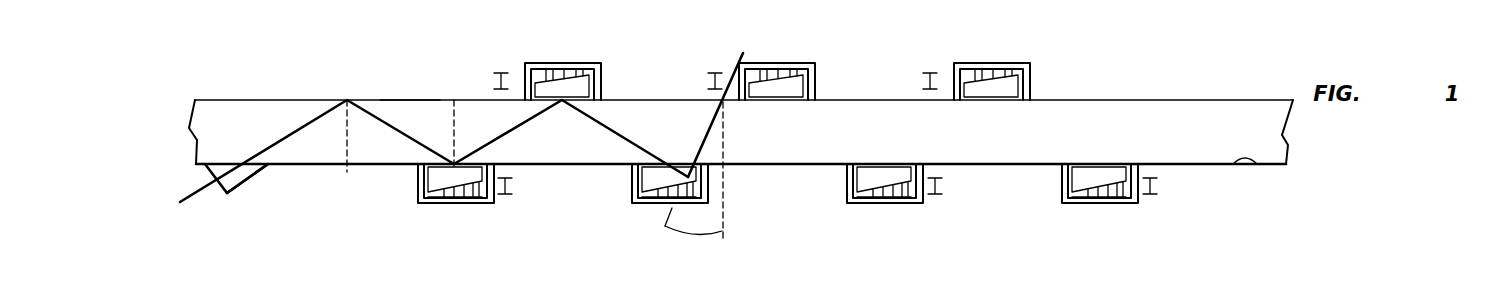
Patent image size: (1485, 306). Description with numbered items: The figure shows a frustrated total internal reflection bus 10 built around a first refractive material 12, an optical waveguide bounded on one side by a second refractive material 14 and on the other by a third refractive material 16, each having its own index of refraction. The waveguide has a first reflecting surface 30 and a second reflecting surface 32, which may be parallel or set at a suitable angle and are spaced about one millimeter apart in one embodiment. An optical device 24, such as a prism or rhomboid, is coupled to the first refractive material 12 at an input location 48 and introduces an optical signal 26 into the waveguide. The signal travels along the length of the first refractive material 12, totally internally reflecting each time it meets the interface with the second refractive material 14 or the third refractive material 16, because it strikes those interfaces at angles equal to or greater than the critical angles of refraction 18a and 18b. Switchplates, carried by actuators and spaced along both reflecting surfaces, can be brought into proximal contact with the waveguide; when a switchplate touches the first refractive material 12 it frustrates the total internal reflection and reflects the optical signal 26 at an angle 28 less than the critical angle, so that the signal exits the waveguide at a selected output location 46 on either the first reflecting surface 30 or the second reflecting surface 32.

The frustrated total internal reflection (FTIR) bus 10 is at (1353, 142).
The first refractive material 12 is at (244, 129).
The second refractive material 14 is at (344, 51).
The third refractive material 16 is at (342, 234).
The critical angle of refraction 18a is at (343, 133).
The critical angle of refraction 18b is at (438, 140).
The optical device 24 is at (229, 199).
The optical signal 26 is at (192, 185).
The angle 28 is at (693, 232).
The first reflecting surface 30 is at (407, 102).
The second reflecting surface 32 is at (1255, 165).
The output location 46 is at (727, 103).
The input location 48 is at (232, 174).